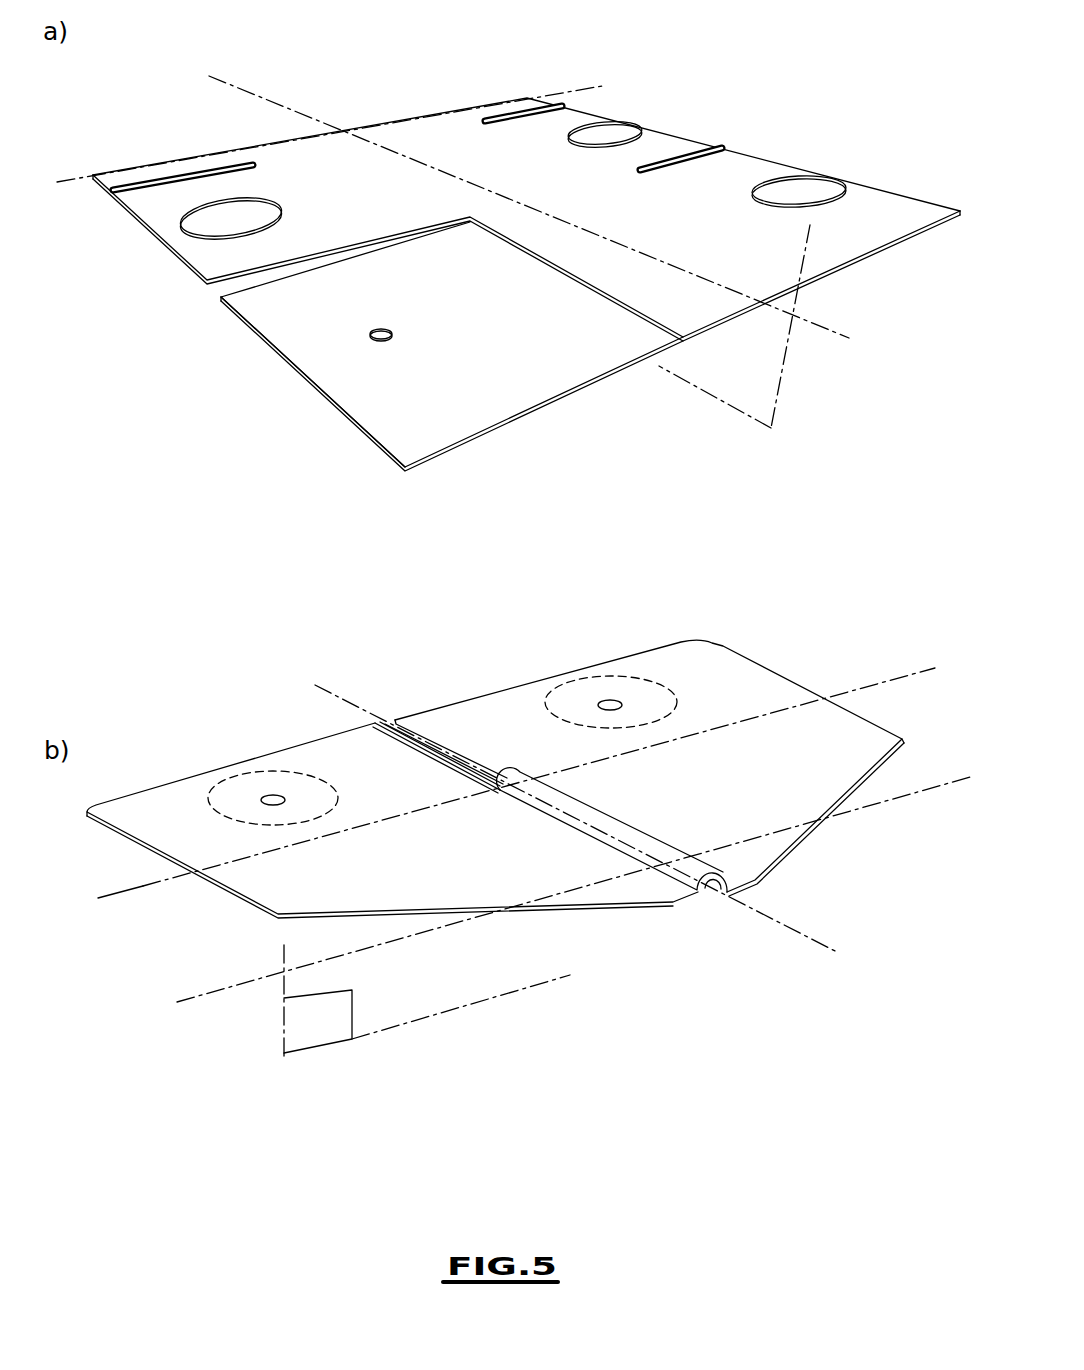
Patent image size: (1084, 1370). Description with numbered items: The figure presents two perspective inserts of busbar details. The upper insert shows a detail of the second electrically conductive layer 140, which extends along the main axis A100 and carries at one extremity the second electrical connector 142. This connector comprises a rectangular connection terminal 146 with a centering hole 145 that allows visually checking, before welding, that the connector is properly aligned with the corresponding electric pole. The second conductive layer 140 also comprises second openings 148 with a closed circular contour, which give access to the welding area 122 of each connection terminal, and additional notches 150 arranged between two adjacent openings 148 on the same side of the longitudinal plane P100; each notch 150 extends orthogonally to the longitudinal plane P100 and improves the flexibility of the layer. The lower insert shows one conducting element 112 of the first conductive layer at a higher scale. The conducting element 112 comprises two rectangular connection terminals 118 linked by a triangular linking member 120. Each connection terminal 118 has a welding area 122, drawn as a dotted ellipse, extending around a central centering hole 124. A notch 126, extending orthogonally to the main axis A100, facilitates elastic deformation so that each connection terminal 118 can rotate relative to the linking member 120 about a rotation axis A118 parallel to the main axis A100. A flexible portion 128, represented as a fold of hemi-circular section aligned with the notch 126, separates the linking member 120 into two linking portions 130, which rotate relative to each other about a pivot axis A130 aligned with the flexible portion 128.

The second electrically conductive layer 140 is at (287, 61).
The second electrical connector 142 is at (491, 385).
The centering hole 145 is at (354, 346).
The connection terminal 146 is at (409, 420).
The second openings 148 is at (663, 124).
The additional notches 150 is at (588, 99).
The main axis A100 is at (515, 547).
The longitudinal plane P100 is at (759, 401).
The conducting element 112 is at (190, 661).
The connection terminal 118 is at (428, 722).
The linking member 120 is at (484, 885).
The welding area 122 is at (203, 764).
The centering hole 124 is at (269, 781).
The notch 126 is at (478, 751).
The flexible portion 128 is at (624, 840).
The linking portion 130 is at (822, 779).
The rotation axis A118 is at (490, 791).
The pivot axis A130 is at (605, 828).